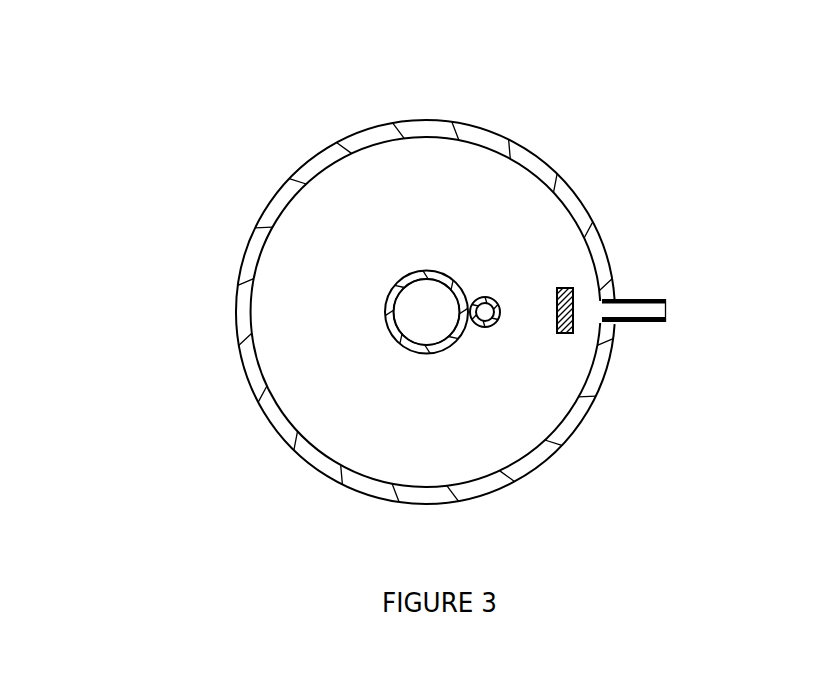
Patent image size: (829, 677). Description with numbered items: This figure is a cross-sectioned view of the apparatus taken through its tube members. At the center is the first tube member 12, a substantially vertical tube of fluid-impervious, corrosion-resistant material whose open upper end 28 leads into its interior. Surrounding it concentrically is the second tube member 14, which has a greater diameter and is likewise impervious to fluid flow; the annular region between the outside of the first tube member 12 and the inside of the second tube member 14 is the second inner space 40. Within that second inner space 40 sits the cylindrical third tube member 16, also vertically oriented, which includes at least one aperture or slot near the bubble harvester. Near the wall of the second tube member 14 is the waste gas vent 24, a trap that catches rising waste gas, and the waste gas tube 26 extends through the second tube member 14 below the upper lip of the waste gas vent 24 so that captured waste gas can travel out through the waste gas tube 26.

The first tube member 12 is at (385, 311).
The second tube member 14 is at (270, 195).
The third tube member 16 is at (490, 304).
The waste gas vent 24 is at (565, 342).
The waste gas tube 26 is at (647, 298).
The upper end 28 is at (428, 310).
The second inner space 40 is at (313, 267).